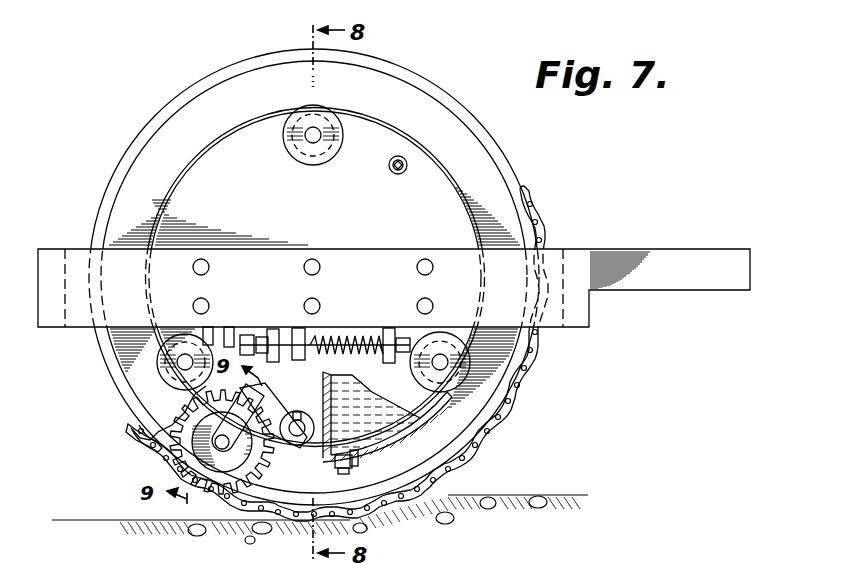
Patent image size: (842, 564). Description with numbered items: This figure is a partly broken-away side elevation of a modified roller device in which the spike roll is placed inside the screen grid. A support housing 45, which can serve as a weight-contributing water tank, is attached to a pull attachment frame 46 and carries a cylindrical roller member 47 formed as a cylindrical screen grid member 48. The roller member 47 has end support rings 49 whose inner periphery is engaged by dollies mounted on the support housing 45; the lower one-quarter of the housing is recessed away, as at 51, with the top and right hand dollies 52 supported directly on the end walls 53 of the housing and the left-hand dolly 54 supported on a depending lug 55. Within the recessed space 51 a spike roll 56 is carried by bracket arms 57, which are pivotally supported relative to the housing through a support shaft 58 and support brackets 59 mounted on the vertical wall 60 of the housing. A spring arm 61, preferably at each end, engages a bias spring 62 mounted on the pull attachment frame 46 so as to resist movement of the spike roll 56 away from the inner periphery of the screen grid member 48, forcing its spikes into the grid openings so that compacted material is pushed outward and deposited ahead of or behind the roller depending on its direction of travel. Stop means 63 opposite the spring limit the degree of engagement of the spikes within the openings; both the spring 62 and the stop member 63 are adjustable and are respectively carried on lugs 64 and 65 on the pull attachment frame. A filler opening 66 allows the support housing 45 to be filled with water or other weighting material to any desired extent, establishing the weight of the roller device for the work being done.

The support housing 45 is at (314, 277).
The pull attachment frame 46 is at (657, 291).
The cylindrical roller member 47 is at (536, 370).
The screen grid member 48 is at (522, 412).
The end support rings 49 is at (497, 177).
The recessed space 51 is at (229, 340).
The top and right hand dollies 52 is at (313, 166).
The end walls 53 is at (431, 408).
The left-hand dolly 54 is at (180, 336).
The depending lug 55 is at (208, 327).
The spike roll 56 is at (168, 452).
The bracket arms 57 is at (295, 446).
The support shaft 58 is at (343, 471).
The support brackets 59 is at (358, 462).
The vertical wall 60 is at (318, 368).
The spring arm 61 is at (290, 397).
The bias spring 62 is at (345, 336).
The stop means 63 is at (297, 328).
The lug 64 is at (388, 328).
The lug 65 is at (271, 330).
The filler opening 66 is at (406, 160).